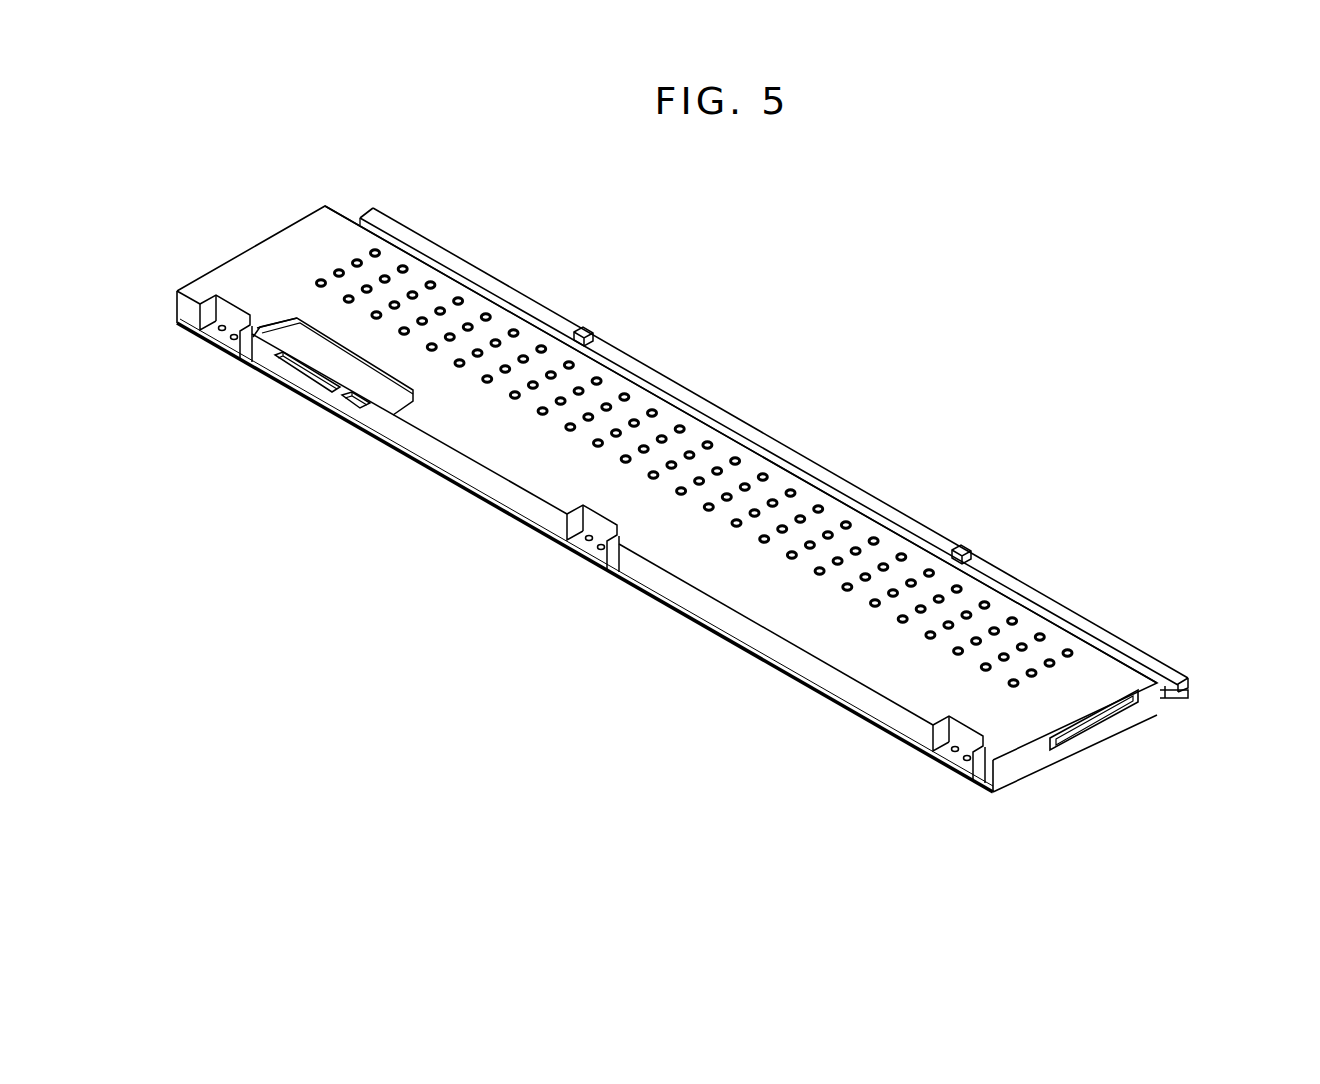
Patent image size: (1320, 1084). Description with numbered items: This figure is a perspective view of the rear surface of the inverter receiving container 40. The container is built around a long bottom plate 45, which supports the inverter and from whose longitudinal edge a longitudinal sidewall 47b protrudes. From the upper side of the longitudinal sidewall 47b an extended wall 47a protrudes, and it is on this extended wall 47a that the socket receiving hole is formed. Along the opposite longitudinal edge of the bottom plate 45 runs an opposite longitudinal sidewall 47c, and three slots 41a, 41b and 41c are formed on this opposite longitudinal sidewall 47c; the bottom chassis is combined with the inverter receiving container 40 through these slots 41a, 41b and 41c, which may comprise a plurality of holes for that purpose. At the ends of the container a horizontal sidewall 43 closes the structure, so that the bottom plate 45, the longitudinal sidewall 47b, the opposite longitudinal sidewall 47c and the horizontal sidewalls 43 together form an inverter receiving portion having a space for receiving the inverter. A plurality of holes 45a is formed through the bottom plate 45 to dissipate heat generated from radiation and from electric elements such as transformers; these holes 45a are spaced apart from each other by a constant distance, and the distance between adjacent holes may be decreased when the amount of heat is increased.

The inverter receiving container 40 is at (714, 535).
The slot 41a is at (228, 345).
The slot 41b is at (945, 762).
The slot 41c is at (570, 548).
The horizontal sidewall 43 is at (1145, 698).
The bottom plate 45 is at (780, 605).
The holes 45a is at (735, 520).
The extended wall 47a is at (1168, 667).
The longitudinal sidewall 47b is at (1185, 693).
The opposite longitudinal sidewall 47c is at (820, 680).